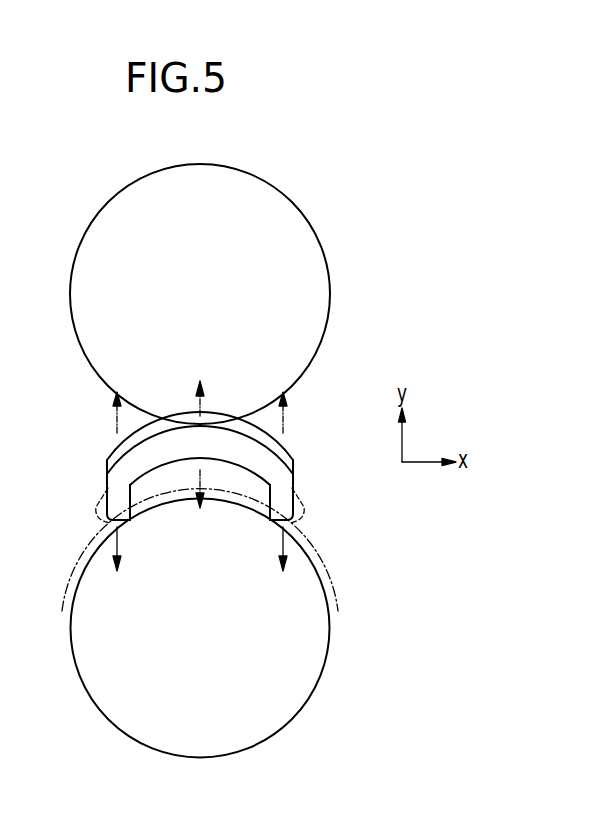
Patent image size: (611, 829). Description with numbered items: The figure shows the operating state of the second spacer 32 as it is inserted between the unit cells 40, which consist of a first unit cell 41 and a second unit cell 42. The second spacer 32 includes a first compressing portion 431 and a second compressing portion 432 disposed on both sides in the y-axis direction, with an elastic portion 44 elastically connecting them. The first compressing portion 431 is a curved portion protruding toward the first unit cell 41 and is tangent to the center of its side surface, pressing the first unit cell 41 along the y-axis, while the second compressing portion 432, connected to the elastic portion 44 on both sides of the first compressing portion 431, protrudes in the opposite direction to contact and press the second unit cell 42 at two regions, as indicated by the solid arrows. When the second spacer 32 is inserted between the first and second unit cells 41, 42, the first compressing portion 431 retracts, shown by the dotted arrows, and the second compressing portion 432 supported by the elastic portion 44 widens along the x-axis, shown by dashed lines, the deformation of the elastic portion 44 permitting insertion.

The unit cells 40 is at (304, 461).
The first unit cell 41 is at (311, 227).
The second unit cell 42 is at (324, 670).
The second spacer 32 is at (198, 442).
The elastic portion 44 is at (277, 465).
The first compressing portion 431 is at (213, 408).
The second compressing portion 432 is at (305, 512).